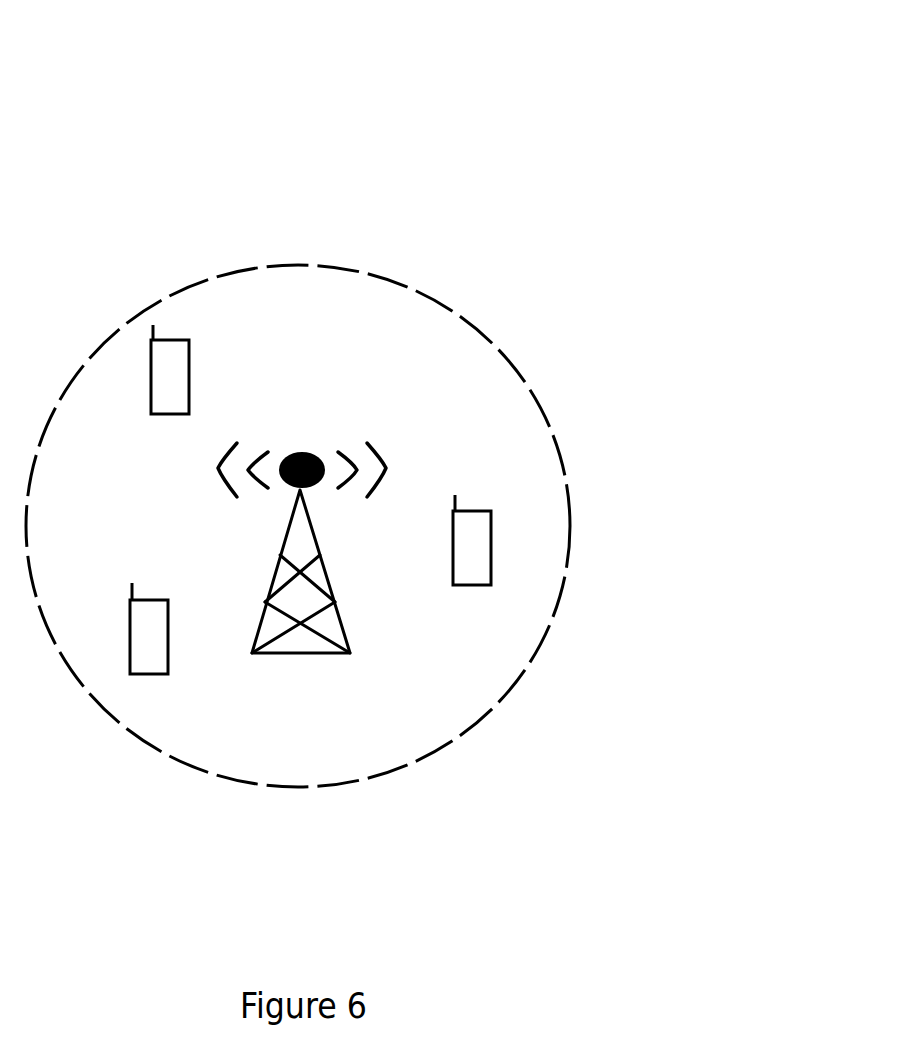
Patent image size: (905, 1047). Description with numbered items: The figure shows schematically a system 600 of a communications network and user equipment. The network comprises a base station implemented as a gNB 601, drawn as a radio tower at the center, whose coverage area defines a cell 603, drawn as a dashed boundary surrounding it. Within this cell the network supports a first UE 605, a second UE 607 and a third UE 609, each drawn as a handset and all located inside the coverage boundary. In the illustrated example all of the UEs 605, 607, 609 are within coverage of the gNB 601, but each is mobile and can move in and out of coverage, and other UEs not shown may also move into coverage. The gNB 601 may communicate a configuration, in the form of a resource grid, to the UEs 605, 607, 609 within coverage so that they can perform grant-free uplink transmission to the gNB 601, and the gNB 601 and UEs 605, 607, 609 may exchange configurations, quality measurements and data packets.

The system 600 is at (402, 215).
The gNB 601 is at (351, 622).
The cell 603 is at (536, 378).
The first UE 605 is at (201, 370).
The second UE 607 is at (124, 611).
The third UE 609 is at (465, 498).